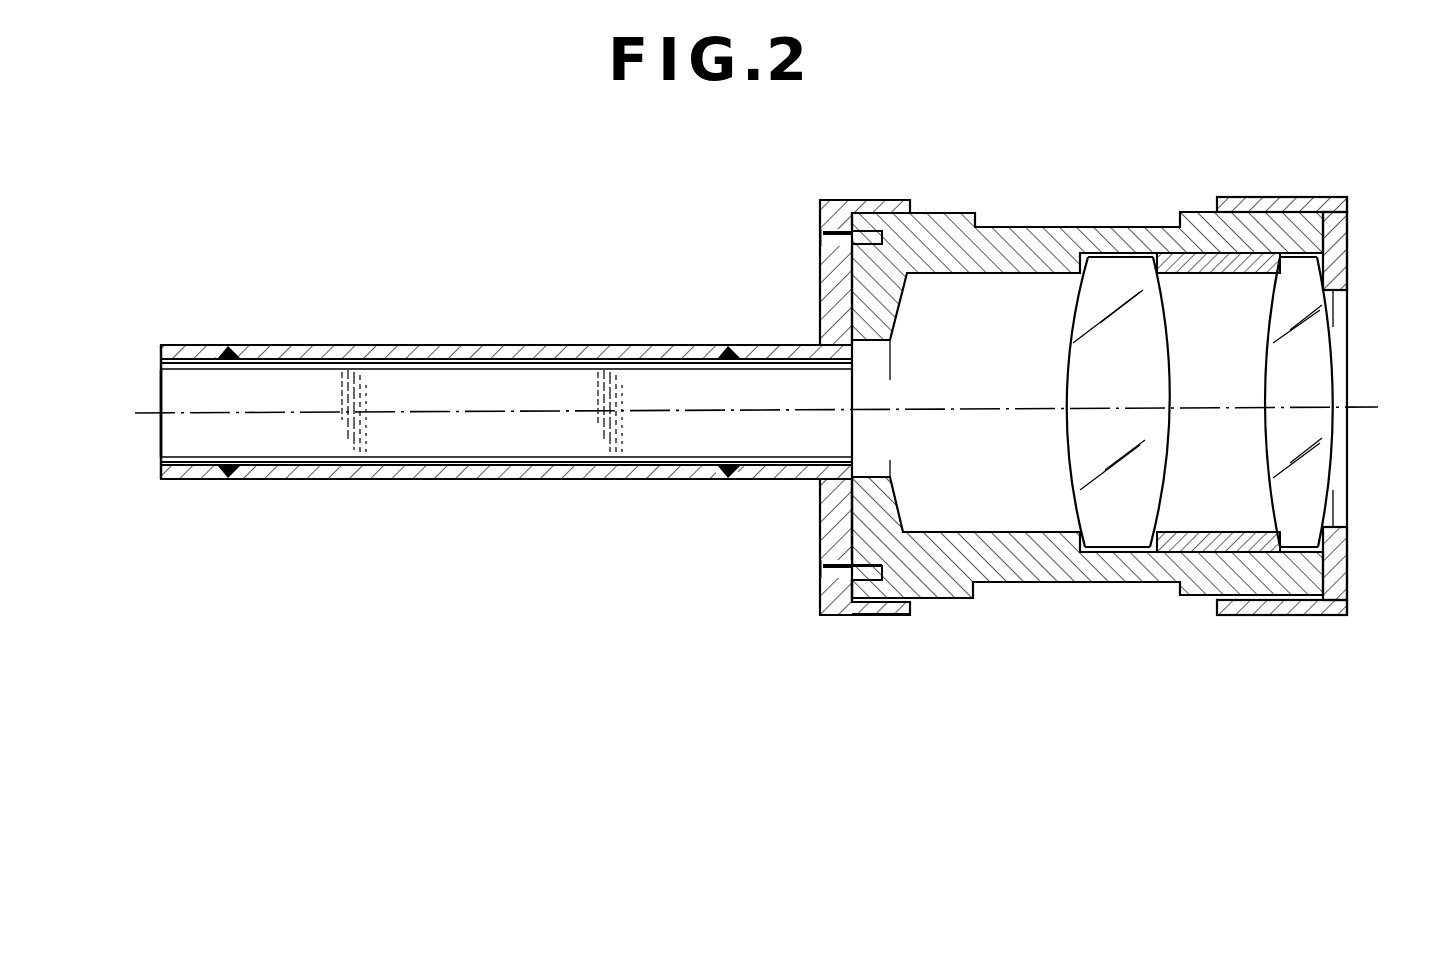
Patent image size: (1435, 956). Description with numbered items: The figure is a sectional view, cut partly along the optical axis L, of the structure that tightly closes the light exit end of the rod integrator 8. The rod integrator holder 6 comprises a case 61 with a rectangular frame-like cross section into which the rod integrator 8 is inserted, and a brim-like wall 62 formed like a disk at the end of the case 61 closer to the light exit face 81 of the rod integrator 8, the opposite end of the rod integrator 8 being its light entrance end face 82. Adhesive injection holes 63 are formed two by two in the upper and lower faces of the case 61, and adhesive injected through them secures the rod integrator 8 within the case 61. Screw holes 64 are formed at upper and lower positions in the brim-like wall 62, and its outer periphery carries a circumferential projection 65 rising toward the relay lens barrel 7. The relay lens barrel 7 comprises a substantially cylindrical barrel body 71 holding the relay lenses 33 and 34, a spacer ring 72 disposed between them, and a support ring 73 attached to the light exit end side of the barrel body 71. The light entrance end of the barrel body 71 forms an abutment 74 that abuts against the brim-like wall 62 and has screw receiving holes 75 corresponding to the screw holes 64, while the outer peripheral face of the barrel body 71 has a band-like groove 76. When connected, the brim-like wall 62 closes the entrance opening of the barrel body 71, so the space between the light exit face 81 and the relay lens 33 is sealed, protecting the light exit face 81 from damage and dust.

The rod integrator holder 6 is at (523, 306).
The relay lens barrel 7 is at (1087, 363).
The rod integrator 8 is at (438, 432).
The relay lens 33 is at (1108, 527).
The relay lens 34 is at (1303, 500).
The case 61 is at (522, 480).
The brim-like wall 62 is at (814, 272).
The adhesive injection holes 63 is at (230, 344).
The screw holes 64 is at (823, 238).
The circumferential projection 65 is at (906, 612).
The barrel body 71 is at (1194, 206).
The spacer ring 72 is at (1167, 548).
The support ring 73 is at (1349, 206).
The abutment 74 is at (835, 517).
The screw receiving holes 75 is at (862, 232).
The band-like groove 76 is at (1032, 227).
The light exit face 81 is at (856, 427).
The light entrance end face 82 is at (156, 434).
The optical axis L is at (1377, 410).